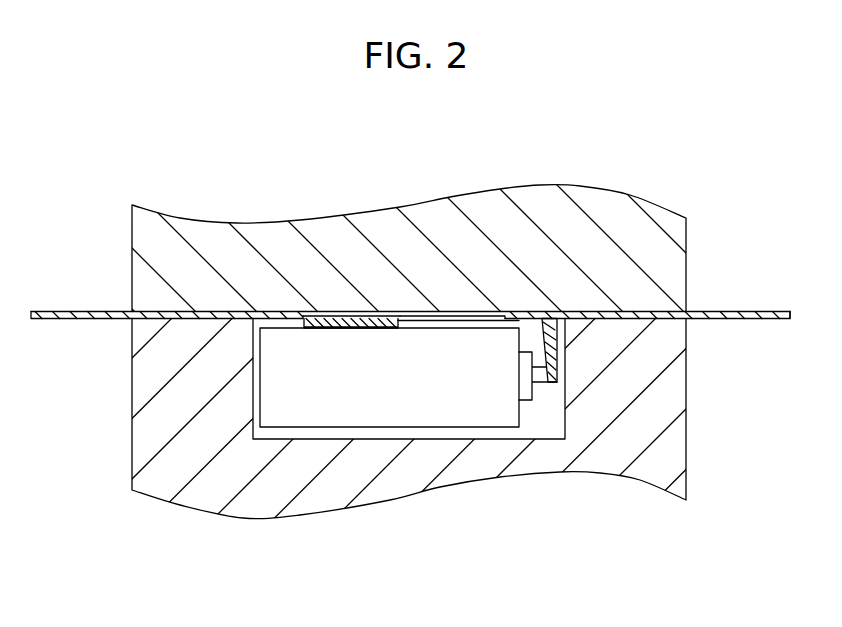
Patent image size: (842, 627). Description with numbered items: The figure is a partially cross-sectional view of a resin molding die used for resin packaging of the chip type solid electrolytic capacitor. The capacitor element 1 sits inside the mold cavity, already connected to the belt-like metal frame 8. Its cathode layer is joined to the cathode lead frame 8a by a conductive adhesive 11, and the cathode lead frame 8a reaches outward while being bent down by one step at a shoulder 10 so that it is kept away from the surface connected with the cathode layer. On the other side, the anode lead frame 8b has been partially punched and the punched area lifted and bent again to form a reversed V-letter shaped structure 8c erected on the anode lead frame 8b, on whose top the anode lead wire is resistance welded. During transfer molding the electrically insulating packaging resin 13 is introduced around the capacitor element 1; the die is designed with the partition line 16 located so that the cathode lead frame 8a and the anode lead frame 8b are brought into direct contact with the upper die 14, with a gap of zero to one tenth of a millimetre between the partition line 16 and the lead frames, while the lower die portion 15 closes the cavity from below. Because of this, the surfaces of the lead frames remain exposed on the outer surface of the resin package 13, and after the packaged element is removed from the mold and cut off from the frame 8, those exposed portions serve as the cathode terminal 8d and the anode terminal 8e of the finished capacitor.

The capacitor element 1 is at (337, 420).
The frame 8 is at (410, 265).
The cathode lead frame 8a is at (193, 310).
The anode lead frame 8b is at (597, 311).
The reversed V-letter shaped structure 8c is at (558, 351).
The cathode terminal 8d is at (272, 311).
The anode terminal 8e is at (518, 313).
The shoulder 10 is at (308, 318).
The conductive adhesive 11 is at (371, 328).
The packaging resin 13 is at (528, 433).
The upper die 14 is at (670, 217).
The lower case 15 is at (600, 470).
The partition line 16 is at (793, 306).